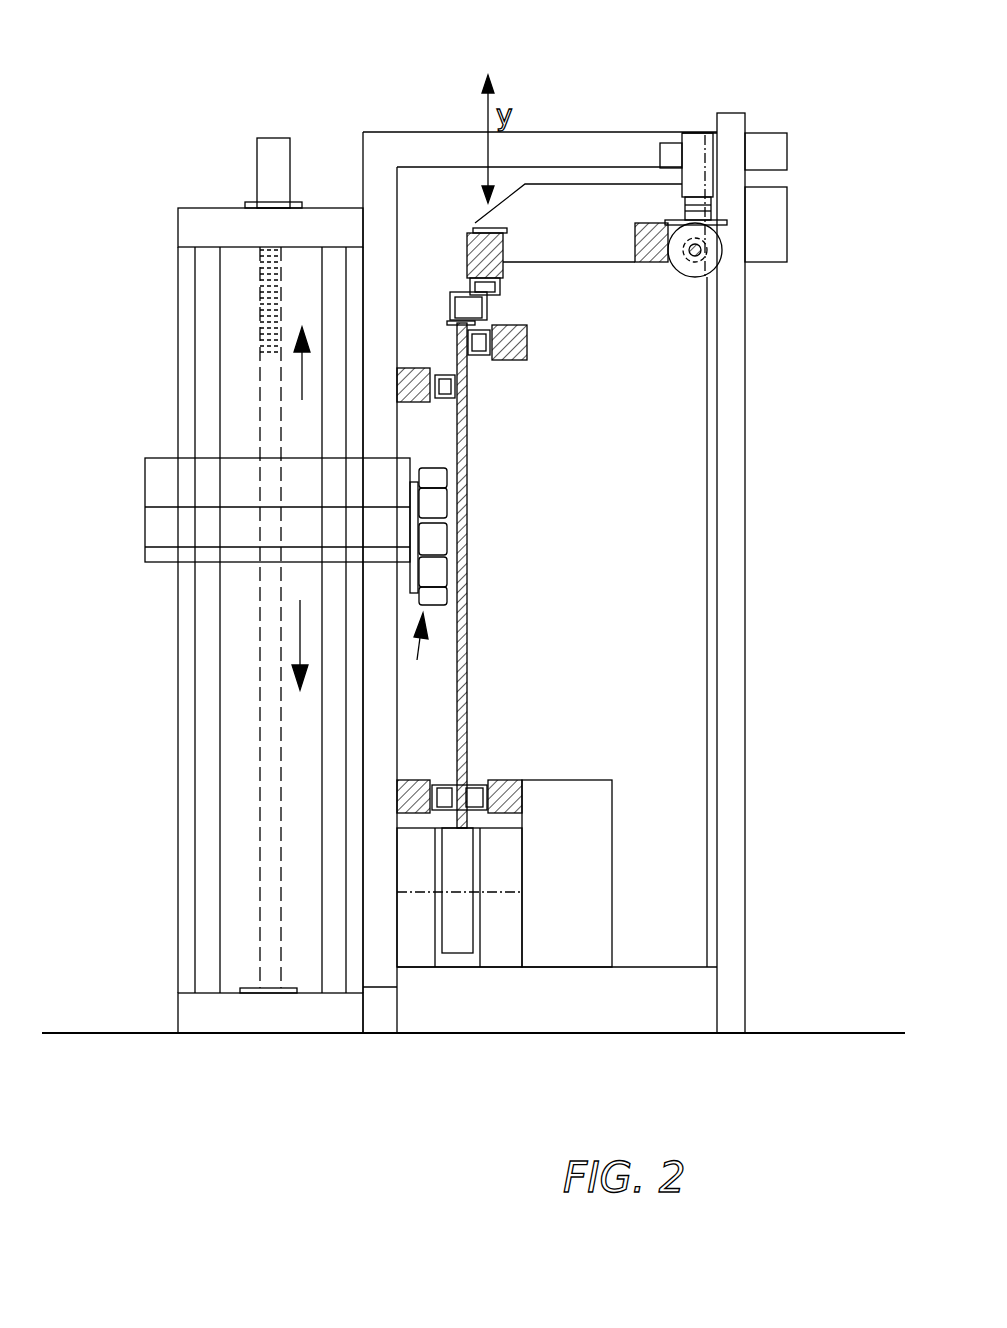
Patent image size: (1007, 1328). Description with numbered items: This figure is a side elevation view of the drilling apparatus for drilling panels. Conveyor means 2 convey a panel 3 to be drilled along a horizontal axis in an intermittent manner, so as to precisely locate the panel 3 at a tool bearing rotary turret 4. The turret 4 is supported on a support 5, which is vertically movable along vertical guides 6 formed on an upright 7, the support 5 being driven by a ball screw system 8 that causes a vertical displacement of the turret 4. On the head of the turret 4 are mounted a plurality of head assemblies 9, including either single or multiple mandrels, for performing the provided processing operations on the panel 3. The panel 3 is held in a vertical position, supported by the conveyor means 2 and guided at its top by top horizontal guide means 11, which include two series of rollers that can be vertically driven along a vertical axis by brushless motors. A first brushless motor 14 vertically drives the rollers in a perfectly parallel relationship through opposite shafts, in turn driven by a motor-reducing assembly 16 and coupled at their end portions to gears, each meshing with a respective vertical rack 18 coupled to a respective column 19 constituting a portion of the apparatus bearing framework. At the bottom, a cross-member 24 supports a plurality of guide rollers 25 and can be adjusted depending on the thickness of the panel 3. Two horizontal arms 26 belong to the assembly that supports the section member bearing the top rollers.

The conveyor means 2 is at (460, 940).
The panel 3 is at (466, 693).
The tool bearing rotary turret 4 is at (419, 663).
The support 5 is at (207, 522).
The vertical guides 6 is at (208, 297).
The upright 7 is at (172, 791).
The ball screw system 8 is at (238, 213).
The head assemblies 9 is at (437, 479).
The top horizontal guide means 11 is at (508, 308).
The first brushless motor 14 is at (693, 148).
The motor-reducing assembly 16 is at (690, 266).
The vertical rack 18 is at (705, 521).
The column 19 is at (735, 600).
The cross-member 24 is at (515, 800).
The guide rollers 25 is at (476, 785).
The horizontal arms 26 is at (578, 200).